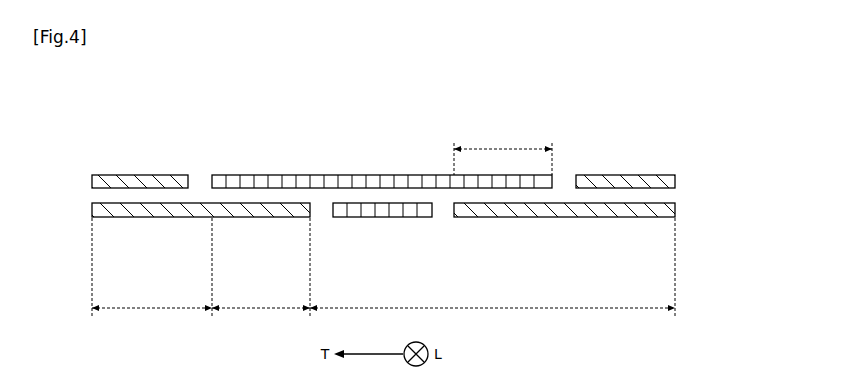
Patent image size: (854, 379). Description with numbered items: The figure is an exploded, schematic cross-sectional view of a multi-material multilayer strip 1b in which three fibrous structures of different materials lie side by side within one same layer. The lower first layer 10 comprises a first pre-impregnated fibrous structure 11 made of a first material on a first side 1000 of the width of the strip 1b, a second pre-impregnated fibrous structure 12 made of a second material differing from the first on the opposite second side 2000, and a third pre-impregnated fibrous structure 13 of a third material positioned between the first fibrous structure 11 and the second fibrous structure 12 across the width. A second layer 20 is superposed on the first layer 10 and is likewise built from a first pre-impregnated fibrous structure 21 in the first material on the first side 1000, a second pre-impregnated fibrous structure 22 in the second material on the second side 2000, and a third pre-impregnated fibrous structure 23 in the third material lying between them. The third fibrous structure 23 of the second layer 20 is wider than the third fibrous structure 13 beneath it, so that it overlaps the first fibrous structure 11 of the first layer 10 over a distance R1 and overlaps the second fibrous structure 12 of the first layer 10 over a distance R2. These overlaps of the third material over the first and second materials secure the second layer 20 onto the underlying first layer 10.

The strip 1b is at (676, 144).
The first layer 10 is at (684, 209).
The first pre-impregnated fibrous structure 11 is at (157, 210).
The second pre-impregnated fibrous structure 12 is at (569, 210).
The third pre-impregnated fibrous structure 13 is at (372, 210).
The second layer 20 is at (684, 179).
The first pre-impregnated fibrous structure 21 is at (147, 180).
The second pre-impregnated fibrous structure 22 is at (613, 180).
The third pre-impregnated fibrous structure 23 is at (319, 180).
The overlap distance R1 is at (261, 299).
The overlap distance R2 is at (503, 152).
The first side 1000 is at (152, 299).
The second side 2000 is at (492, 299).